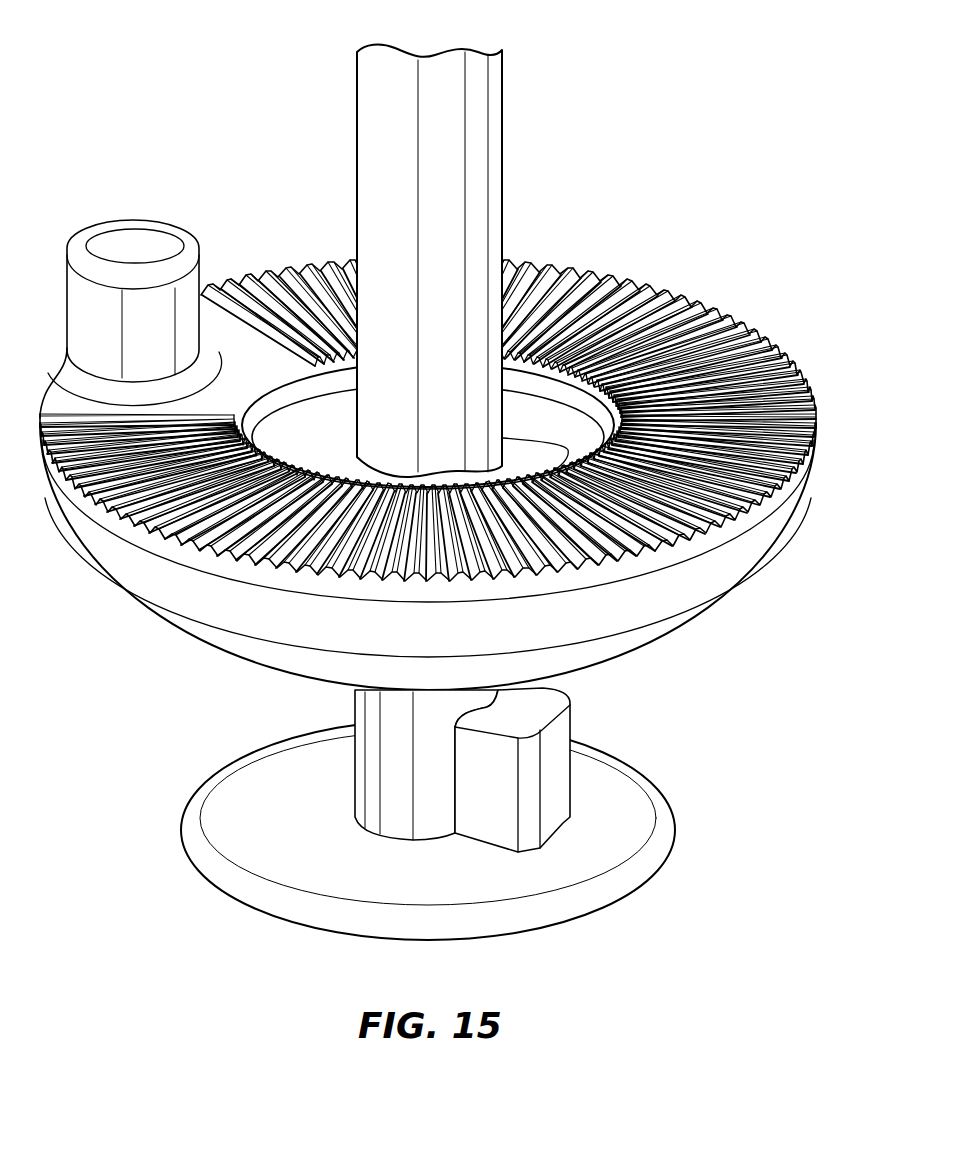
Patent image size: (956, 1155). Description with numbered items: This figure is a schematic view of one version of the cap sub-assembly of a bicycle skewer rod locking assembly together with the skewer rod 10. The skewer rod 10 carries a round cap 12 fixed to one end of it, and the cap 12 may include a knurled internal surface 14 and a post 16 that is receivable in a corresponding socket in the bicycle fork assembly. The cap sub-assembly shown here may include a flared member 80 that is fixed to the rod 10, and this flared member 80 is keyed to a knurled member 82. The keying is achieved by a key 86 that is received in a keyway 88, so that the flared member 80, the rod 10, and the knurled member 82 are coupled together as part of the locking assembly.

The skewer rod 10 is at (375, 112).
The round cap 12 is at (428, 502).
The knurled internal surface 14 is at (428, 408).
The post 16 is at (131, 240).
The flared member 80 is at (270, 775).
The knurled member 82 is at (720, 583).
The key 86 is at (562, 740).
The keyway 88 is at (545, 468).